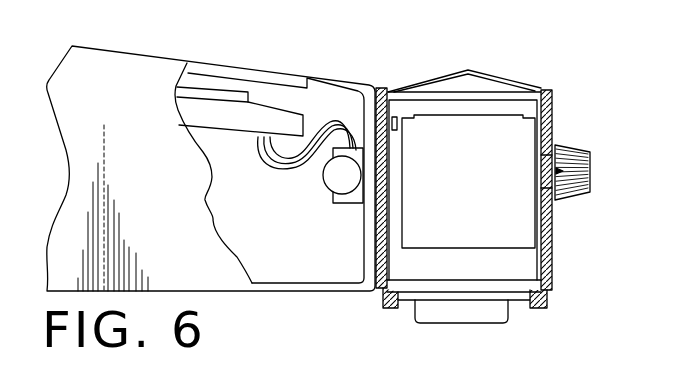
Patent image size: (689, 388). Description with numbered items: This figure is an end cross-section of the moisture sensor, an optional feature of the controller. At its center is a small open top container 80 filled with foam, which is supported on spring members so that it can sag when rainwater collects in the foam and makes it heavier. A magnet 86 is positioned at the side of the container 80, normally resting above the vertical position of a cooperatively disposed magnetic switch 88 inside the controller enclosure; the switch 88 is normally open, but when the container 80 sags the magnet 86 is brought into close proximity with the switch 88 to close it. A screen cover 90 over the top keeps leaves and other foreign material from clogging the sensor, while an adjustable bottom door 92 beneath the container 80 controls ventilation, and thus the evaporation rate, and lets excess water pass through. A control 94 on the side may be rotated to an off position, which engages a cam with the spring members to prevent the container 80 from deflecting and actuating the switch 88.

The open top container 80 is at (500, 215).
The magnet 86 is at (395, 117).
The magnetic switch 88 is at (343, 178).
The screen cover 90 is at (486, 77).
The adjustable bottom door 92 is at (422, 295).
The control 94 is at (582, 147).